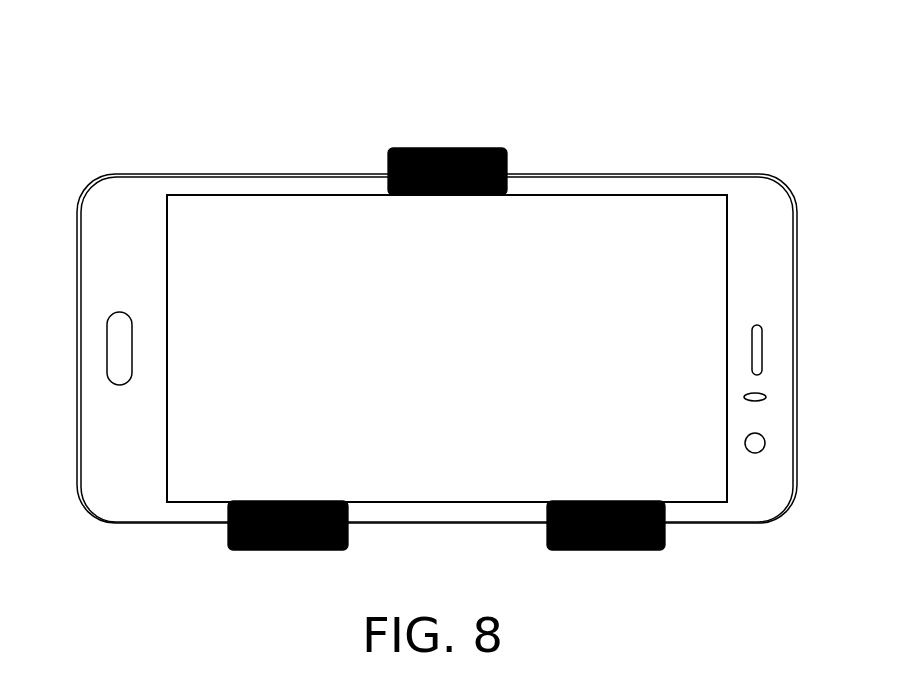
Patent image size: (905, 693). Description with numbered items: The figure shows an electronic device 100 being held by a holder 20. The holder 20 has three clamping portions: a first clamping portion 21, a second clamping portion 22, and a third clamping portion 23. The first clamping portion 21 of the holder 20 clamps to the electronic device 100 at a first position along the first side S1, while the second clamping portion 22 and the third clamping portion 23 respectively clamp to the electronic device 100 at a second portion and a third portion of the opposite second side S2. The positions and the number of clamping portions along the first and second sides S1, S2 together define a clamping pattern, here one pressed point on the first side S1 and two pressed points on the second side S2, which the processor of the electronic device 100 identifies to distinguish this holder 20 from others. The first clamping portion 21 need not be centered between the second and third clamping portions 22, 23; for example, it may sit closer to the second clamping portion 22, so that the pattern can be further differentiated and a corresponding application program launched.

The holder 20 is at (352, 317).
The first clamping portion 21 is at (447, 148).
The second clamping portion 22 is at (294, 551).
The third clamping portion 23 is at (600, 551).
The electronic device 100 is at (770, 203).
The first side S1 is at (593, 175).
The second side S2 is at (712, 525).